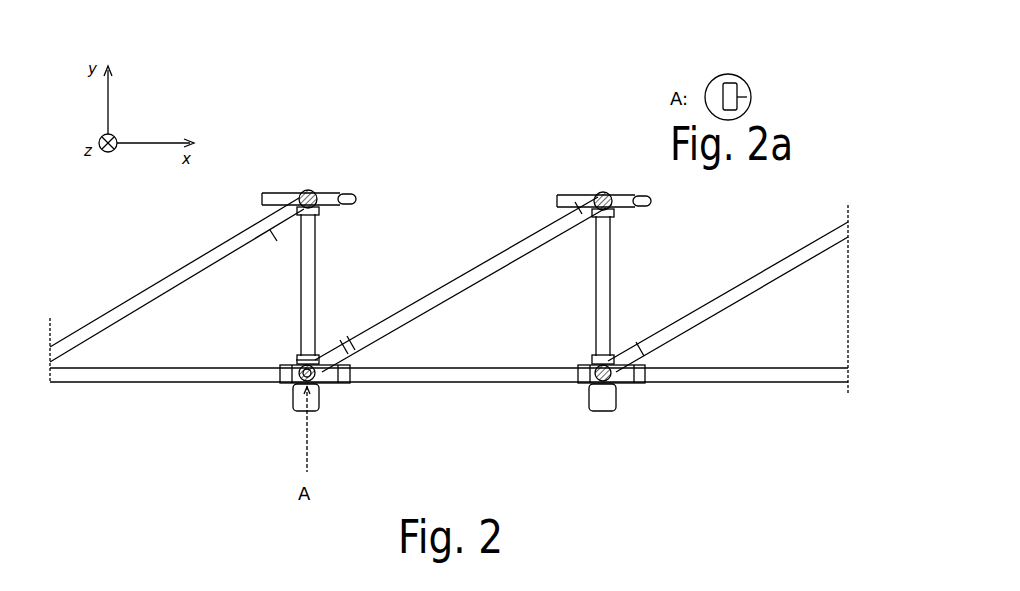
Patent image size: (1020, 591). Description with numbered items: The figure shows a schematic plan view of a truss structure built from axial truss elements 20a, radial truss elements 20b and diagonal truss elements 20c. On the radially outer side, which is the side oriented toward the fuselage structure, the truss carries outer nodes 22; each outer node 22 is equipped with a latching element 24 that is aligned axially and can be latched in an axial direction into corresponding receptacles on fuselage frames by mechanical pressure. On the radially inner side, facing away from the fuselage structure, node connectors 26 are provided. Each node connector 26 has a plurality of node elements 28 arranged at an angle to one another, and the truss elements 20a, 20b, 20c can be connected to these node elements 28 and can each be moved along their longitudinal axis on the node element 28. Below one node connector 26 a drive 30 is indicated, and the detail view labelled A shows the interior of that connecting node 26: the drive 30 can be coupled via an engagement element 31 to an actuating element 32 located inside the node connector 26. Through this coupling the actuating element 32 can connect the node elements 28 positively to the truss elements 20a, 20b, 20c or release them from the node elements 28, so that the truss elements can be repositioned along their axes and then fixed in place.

In FIG. 2, the axial truss element 20a is at (210, 370).
In FIG. 2, the radial truss element 20b is at (318, 224).
In FIG. 2, the diagonal truss element 20c is at (170, 276).
In FIG. 2, the outer node 22 is at (313, 191).
In FIG. 2, the latching element 24 is at (353, 196).
In FIG. 2, the node connector 26 is at (316, 386).
In FIG. 2, the node element 28 is at (326, 356).
In FIG. 2A, the node element 28 is at (752, 96).
In FIG. 2, the drive 30 is at (320, 413).
In FIG. 2A, the engagement element 31 is at (744, 84).
In FIG. 2, the actuating element 32 is at (298, 363).